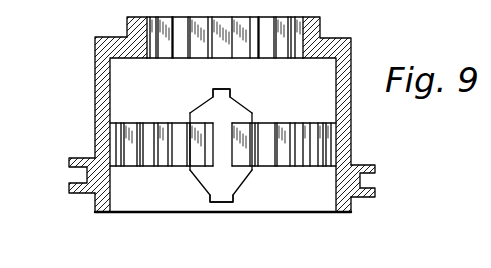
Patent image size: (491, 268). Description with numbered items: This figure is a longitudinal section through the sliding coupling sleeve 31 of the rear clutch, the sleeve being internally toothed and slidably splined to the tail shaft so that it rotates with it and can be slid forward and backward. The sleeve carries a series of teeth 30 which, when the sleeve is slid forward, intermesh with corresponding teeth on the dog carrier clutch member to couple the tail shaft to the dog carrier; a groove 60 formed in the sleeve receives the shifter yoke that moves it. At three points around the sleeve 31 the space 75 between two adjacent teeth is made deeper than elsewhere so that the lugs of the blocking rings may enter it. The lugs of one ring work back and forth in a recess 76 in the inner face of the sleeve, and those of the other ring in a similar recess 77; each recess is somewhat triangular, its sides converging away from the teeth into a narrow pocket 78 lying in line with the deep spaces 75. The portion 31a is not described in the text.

The sliding coupling sleeve 31 is at (97, 81).
The housing top fin section 31a is at (280, 23).
The teeth 30 is at (161, 126).
The space 75 is at (221, 141).
The recess 76 is at (221, 106).
The recess 77 is at (221, 186).
The pocket 78 is at (223, 94).
The groove 60 is at (367, 182).